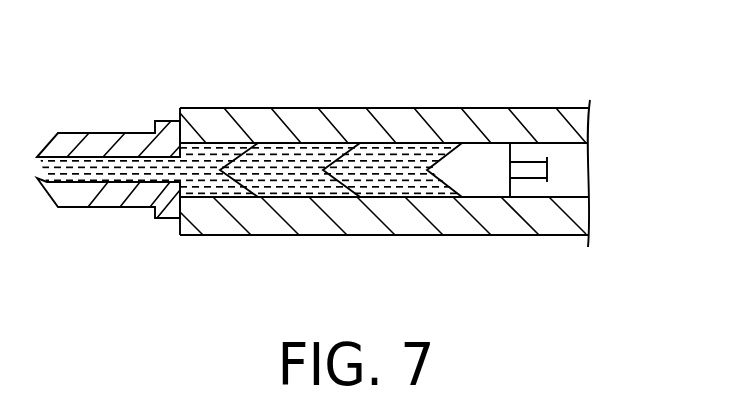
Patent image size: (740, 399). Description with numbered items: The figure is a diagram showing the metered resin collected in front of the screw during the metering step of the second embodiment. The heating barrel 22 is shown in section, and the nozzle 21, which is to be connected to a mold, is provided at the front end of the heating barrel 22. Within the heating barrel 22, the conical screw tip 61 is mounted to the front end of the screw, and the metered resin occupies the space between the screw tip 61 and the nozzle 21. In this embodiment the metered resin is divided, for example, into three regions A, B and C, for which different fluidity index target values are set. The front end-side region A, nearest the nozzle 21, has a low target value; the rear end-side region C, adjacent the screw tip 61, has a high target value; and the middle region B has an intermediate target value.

The nozzle 21 is at (103, 142).
The heating barrel 22 is at (397, 121).
The screw tip 61 is at (494, 150).
The front end-side region A is at (202, 183).
The middle region B is at (303, 183).
The rear end-side region C is at (408, 183).